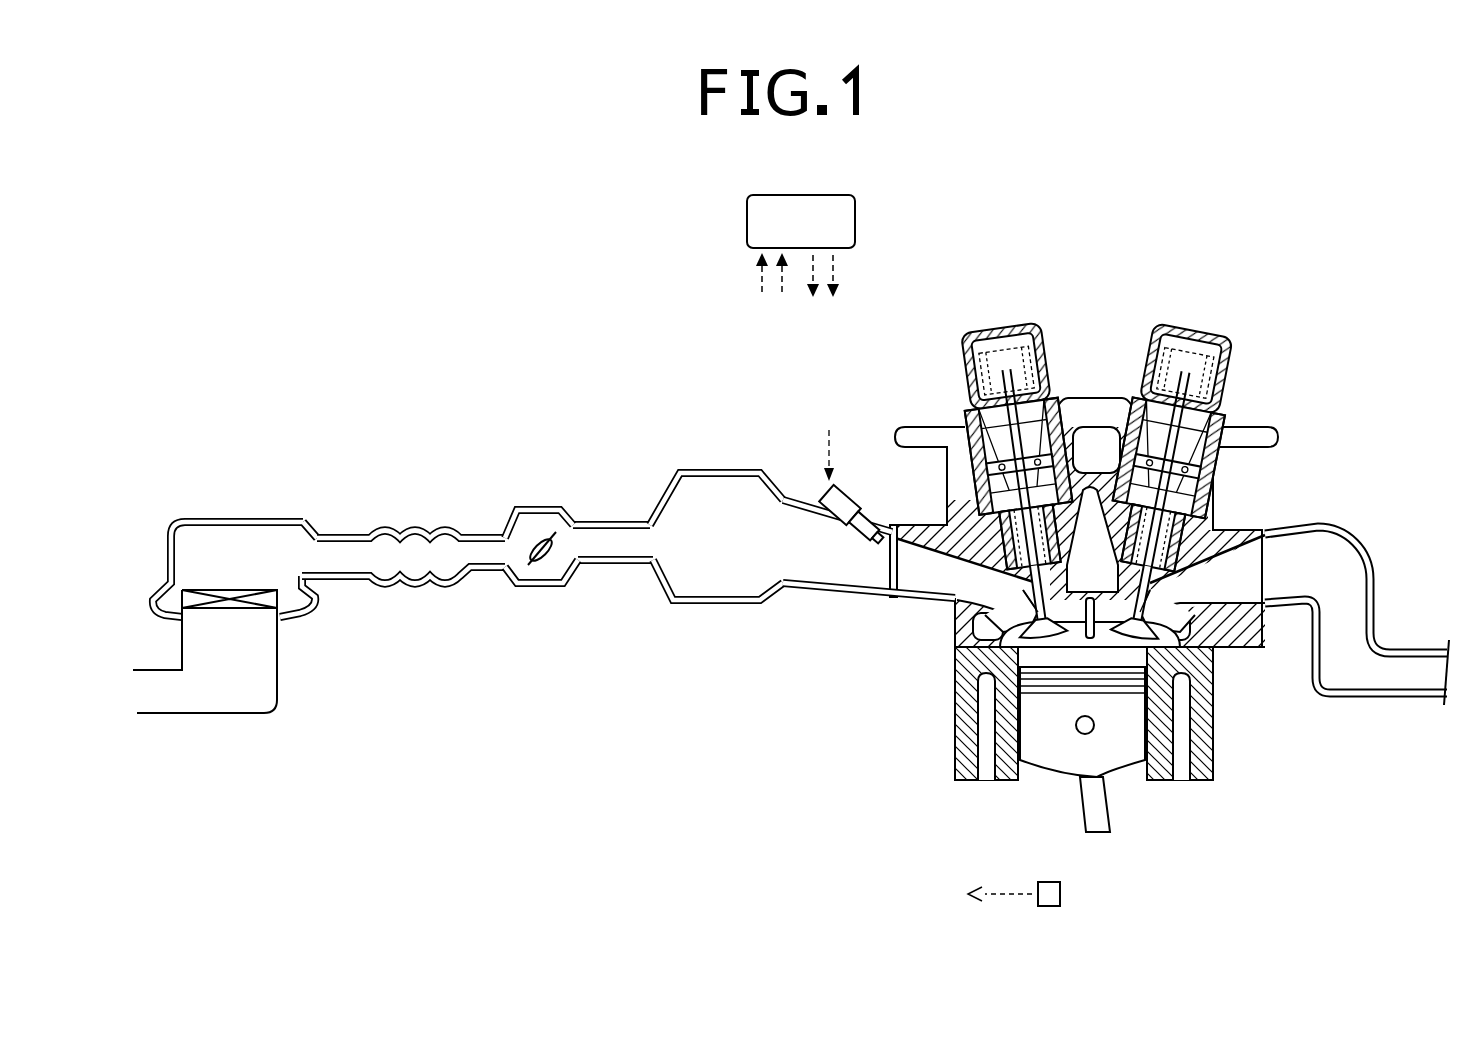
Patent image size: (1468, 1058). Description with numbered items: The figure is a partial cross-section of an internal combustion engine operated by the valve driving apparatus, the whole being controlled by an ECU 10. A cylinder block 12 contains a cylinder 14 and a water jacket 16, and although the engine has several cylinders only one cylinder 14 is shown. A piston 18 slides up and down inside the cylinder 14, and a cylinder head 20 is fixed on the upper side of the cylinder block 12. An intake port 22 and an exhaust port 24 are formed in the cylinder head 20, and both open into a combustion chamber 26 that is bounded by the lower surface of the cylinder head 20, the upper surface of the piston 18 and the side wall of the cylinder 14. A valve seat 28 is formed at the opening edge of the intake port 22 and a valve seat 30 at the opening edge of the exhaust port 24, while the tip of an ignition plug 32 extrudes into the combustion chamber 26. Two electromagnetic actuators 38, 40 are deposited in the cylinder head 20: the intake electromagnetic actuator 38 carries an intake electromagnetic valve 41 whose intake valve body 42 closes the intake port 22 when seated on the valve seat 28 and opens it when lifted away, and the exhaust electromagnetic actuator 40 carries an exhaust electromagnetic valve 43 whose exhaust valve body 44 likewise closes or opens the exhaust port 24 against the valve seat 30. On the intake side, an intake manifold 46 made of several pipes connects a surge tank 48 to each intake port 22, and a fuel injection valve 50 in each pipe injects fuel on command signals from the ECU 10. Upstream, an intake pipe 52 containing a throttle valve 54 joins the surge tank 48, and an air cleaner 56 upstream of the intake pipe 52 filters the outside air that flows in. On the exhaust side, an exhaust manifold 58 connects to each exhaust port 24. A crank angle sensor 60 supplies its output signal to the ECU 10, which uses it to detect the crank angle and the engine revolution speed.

The ECU 10 is at (855, 225).
The cylinder block 12 is at (1200, 770).
The cylinder 14 is at (1135, 780).
The water jacket 16 is at (953, 760).
The piston 18 is at (1050, 773).
The cylinder head 20 is at (925, 585).
The intake port 22 is at (930, 592).
The exhaust port 24 is at (1235, 577).
The combustion chamber 26 is at (1190, 698).
The valve seat 28 is at (953, 683).
The valve seat 30 is at (1213, 673).
The ignition plug 32 is at (1092, 562).
The intake electromagnetic actuator 38 is at (1053, 343).
The exhaust electromagnetic actuator 40 is at (1140, 355).
The intake electromagnetic valve 41 is at (1025, 594).
The intake valve body 42 is at (953, 715).
The exhaust electromagnetic valve 43 is at (1165, 594).
The exhaust valve body 44 is at (1127, 663).
The intake manifold 46 is at (822, 590).
The surge tank 48 is at (745, 470).
The fuel injection valve 50 is at (848, 500).
The intake pipe 52 is at (625, 565).
The throttle valve 54 is at (545, 568).
The air cleaner 56 is at (240, 518).
The exhaust manifold 58 is at (1345, 563).
The crank angle sensor 60 is at (1062, 893).